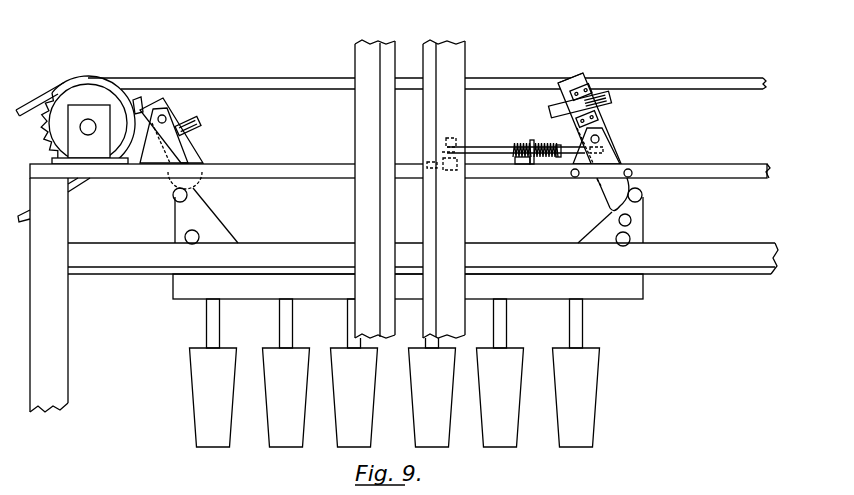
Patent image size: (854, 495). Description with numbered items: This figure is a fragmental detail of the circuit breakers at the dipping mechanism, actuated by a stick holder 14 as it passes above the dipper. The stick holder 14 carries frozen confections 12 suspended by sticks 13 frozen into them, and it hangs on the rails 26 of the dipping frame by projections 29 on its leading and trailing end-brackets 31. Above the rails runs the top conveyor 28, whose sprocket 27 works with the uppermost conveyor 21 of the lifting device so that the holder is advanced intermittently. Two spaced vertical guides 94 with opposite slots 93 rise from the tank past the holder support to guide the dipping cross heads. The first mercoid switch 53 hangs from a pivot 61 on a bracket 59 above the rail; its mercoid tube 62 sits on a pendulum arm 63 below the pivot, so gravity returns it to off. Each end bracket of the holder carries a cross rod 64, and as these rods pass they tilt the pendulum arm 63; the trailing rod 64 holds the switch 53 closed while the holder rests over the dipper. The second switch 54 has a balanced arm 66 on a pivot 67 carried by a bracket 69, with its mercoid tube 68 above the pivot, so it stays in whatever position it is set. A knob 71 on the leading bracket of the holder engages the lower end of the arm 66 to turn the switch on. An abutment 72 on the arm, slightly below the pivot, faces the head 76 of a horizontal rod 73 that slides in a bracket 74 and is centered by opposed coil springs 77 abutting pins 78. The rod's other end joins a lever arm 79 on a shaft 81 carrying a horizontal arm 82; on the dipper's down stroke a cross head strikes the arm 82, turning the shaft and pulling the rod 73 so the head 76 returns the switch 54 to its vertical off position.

The frozen confections 12 is at (272, 440).
The sticks 13 is at (220, 323).
The stick holder 14 is at (633, 299).
The uppermost conveyor 21 is at (42, 101).
The rails 26 is at (730, 253).
The sprocket 27 is at (72, 95).
The top conveyor 28 is at (195, 83).
The projections 29 is at (185, 235).
The end-brackets 31 is at (174, 214).
The switch 53 is at (179, 103).
The switch 54 is at (590, 76).
The bracket 59 is at (193, 150).
The pivot 61 is at (162, 115).
The mercoid tube 62 is at (199, 129).
The pendulum arm 63 is at (199, 183).
The cross rod 64 is at (173, 194).
The arm 66 is at (607, 190).
The pivot 67 is at (600, 137).
The mercoid tube 68 is at (610, 101).
The bracket 69 is at (612, 158).
The knob 71 is at (618, 219).
The abutment 72 is at (581, 137).
The rod 73 is at (489, 148).
The bracket 74 is at (531, 165).
The head 76 is at (605, 147).
The coil springs 77 is at (535, 145).
The pins 78 is at (514, 158).
The lever arm 79 is at (446, 140).
The shaft 81 is at (452, 171).
The horizontal arm 82 is at (432, 169).
The slots 93 is at (397, 55).
The vertical guides 94 is at (367, 50).